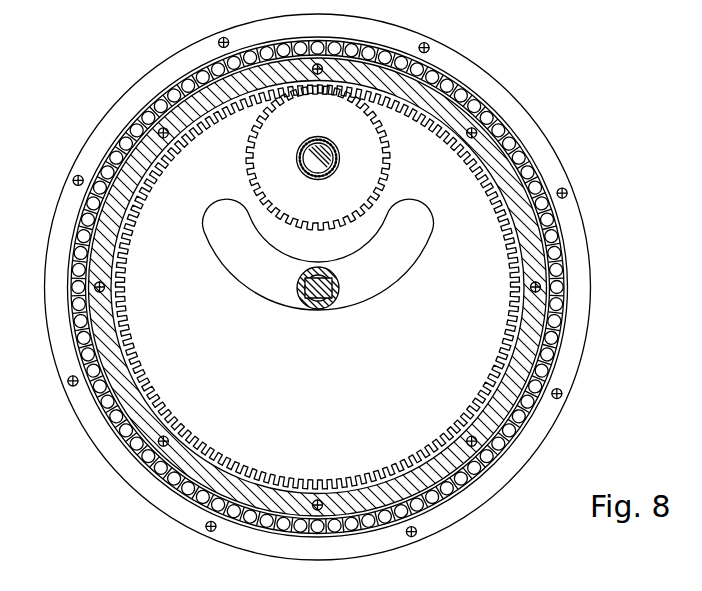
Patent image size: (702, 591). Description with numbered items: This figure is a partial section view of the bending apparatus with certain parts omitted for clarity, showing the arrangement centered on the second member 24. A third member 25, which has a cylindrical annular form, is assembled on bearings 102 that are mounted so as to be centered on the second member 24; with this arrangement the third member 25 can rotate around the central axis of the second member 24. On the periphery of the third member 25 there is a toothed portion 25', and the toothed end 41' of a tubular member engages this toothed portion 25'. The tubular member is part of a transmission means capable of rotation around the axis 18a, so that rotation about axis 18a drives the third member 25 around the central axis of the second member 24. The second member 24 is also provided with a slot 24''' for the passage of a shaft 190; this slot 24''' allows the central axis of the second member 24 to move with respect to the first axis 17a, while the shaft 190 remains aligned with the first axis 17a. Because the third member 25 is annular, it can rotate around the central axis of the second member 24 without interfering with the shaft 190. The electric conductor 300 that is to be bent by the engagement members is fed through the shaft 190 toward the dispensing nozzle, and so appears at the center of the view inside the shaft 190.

The second member 24 is at (329, 287).
The bearings 102 is at (553, 240).
The third member 25 is at (351, 295).
The toothed portion 25' is at (317, 286).
The end of tubular member 41' is at (336, 151).
The axis 18a is at (336, 151).
The slot 24''' is at (318, 254).
The first axis 17a is at (337, 288).
The shaft 190 is at (307, 299).
The electric conductor 300 is at (330, 307).